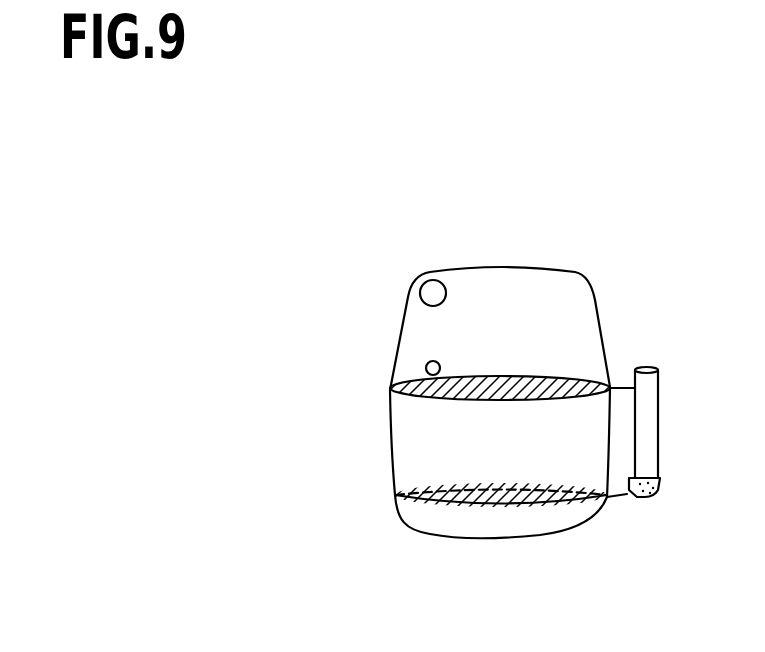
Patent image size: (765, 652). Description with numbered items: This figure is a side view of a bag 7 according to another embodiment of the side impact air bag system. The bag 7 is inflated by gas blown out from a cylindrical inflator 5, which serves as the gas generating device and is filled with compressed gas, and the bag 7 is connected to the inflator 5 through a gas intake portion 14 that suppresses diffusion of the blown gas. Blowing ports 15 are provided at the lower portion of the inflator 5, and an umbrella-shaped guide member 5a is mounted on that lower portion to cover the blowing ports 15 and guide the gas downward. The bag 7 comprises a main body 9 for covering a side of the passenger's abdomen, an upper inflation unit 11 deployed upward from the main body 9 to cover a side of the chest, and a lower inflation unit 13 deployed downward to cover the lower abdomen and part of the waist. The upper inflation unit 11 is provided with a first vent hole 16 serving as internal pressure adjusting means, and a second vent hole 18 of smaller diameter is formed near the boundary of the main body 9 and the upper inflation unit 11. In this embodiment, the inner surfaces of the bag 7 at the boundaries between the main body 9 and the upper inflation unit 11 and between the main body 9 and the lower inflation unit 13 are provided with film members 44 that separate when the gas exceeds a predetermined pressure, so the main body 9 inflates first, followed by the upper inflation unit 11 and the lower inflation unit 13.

The inflator 5 is at (647, 380).
The guide member 5a is at (657, 482).
The bag 7 is at (380, 485).
The main body 9 is at (422, 427).
The upper inflation unit 11 is at (497, 282).
The lower inflation unit 13 is at (497, 523).
The gas intake portion 14 is at (623, 493).
The blowing ports 15 is at (657, 500).
The first vent hole 16 is at (428, 281).
The second vent hole 18 is at (427, 366).
The film member 44 is at (517, 382).